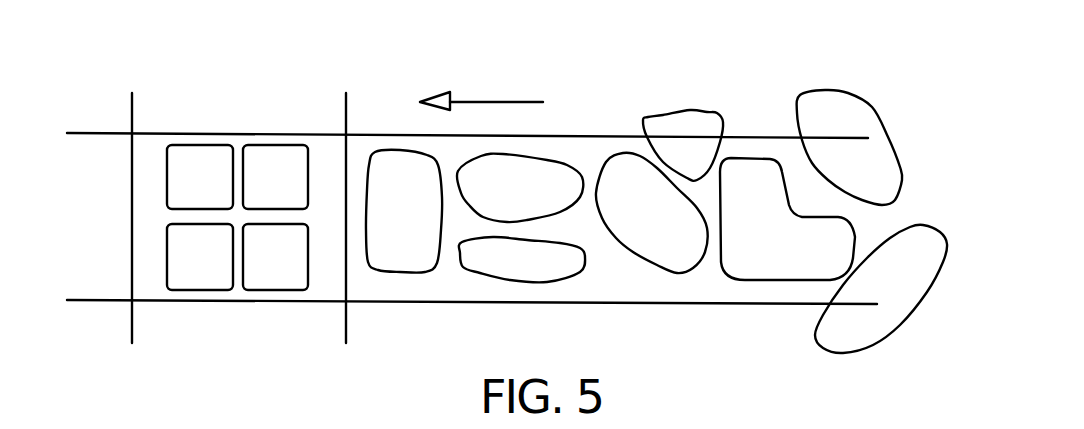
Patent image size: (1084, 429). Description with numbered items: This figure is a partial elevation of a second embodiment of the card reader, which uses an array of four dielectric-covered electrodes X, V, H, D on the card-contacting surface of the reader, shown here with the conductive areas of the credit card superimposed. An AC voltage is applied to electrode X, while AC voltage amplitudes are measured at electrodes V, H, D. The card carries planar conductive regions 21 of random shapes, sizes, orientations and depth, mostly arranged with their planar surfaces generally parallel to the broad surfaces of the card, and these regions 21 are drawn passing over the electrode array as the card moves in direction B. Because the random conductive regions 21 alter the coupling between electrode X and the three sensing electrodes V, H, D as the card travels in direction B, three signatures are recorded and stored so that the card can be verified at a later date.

The planar conductive regions 21 is at (522, 173).
The direction of card movement B is at (498, 101).
The electrode X is at (200, 177).
The electrode H is at (275, 177).
The electrode V is at (200, 257).
The electrode D is at (275, 257).